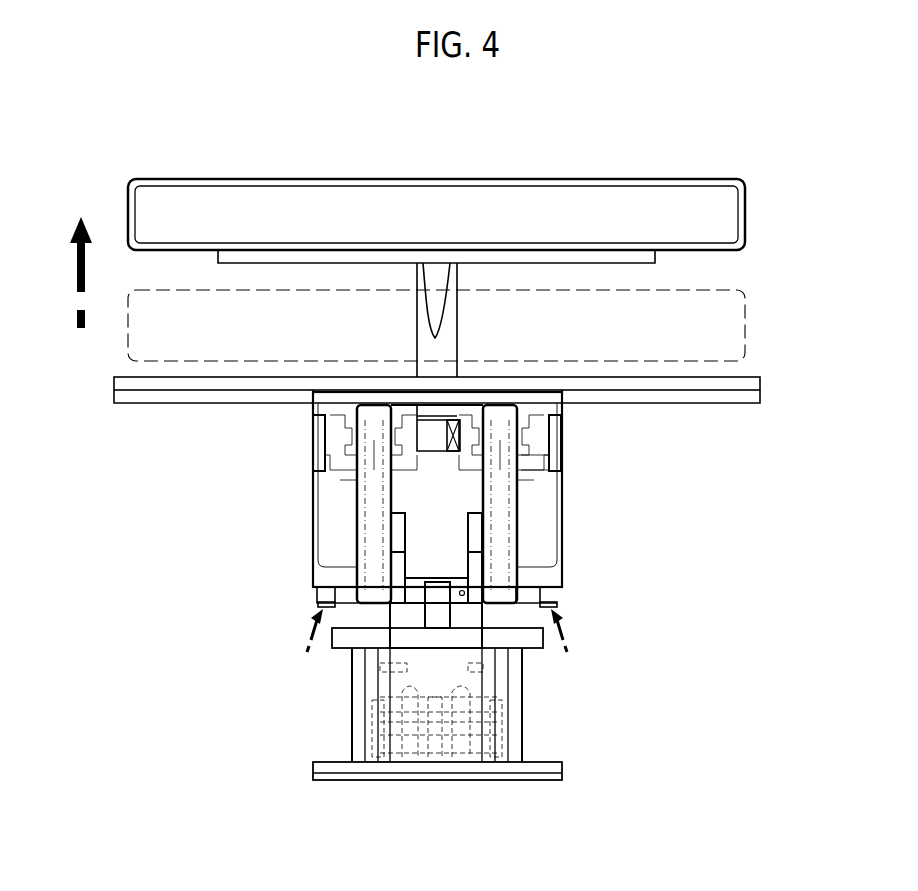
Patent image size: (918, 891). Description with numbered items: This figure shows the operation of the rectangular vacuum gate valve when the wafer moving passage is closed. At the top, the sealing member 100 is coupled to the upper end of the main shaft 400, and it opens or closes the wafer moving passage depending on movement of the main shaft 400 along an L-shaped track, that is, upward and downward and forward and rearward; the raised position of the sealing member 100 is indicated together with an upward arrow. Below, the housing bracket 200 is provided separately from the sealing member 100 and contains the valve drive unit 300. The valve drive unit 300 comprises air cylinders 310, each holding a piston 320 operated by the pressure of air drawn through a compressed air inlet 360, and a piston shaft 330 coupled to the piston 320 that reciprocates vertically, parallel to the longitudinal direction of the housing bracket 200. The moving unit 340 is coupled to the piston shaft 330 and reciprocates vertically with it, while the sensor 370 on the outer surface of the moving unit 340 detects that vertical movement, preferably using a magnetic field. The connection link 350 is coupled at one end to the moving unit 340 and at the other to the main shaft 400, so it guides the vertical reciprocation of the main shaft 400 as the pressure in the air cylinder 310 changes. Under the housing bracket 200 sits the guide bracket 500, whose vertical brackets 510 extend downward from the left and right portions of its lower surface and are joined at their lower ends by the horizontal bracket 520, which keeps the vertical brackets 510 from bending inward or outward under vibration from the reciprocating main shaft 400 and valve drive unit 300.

The sealing member 100 is at (712, 220).
The housing bracket 200 is at (310, 512).
The valve drive unit 300 is at (538, 546).
The air cylinder 310 is at (545, 445).
The piston 320 is at (547, 418).
The piston shaft 330 is at (560, 515).
The moving unit 340 is at (503, 638).
The connection link 350 is at (437, 605).
The compressed air inlet 360 is at (563, 594).
The sensor 370 is at (462, 431).
The main shaft 400 is at (448, 332).
The guide bracket 500 is at (359, 714).
The vertical bracket 510 is at (358, 697).
The horizontal bracket 520 is at (345, 768).